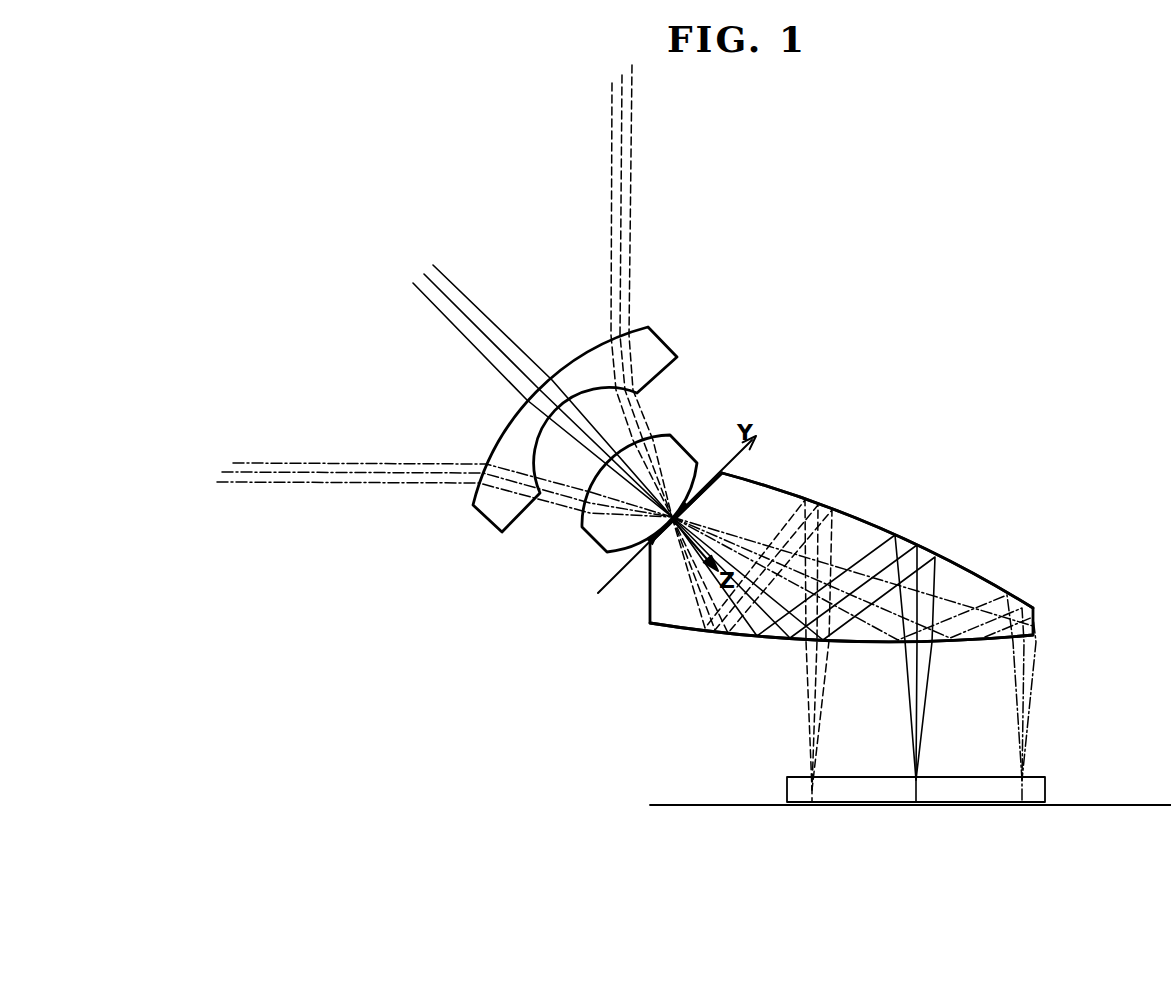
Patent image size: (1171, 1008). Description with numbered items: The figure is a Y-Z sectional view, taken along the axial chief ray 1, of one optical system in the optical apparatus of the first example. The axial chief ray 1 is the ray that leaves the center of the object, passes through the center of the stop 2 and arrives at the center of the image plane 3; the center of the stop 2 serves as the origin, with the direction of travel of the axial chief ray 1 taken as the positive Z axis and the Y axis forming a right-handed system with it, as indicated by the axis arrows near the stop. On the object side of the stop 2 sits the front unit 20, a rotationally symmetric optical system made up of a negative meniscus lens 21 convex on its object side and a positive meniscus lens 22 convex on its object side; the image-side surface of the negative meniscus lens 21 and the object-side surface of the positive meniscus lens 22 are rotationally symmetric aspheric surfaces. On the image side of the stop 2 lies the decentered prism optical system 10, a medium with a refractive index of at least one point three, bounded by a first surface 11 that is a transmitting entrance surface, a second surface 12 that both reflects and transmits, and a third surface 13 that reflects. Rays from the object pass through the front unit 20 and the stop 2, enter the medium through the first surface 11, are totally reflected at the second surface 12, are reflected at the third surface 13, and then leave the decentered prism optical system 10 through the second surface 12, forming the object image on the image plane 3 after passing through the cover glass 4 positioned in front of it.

The axial chief ray 1 is at (458, 311).
The stop 2 is at (647, 538).
The image plane 3 is at (940, 808).
The cover glass 4 is at (1046, 791).
The decentered prism optical system 10 is at (875, 499).
The first surface 11 is at (650, 545).
The second surface 12 is at (773, 643).
The third surface 13 is at (922, 542).
The front unit 20 is at (635, 429).
The negative meniscus lens 21 is at (654, 350).
The positive meniscus lens 22 is at (678, 452).